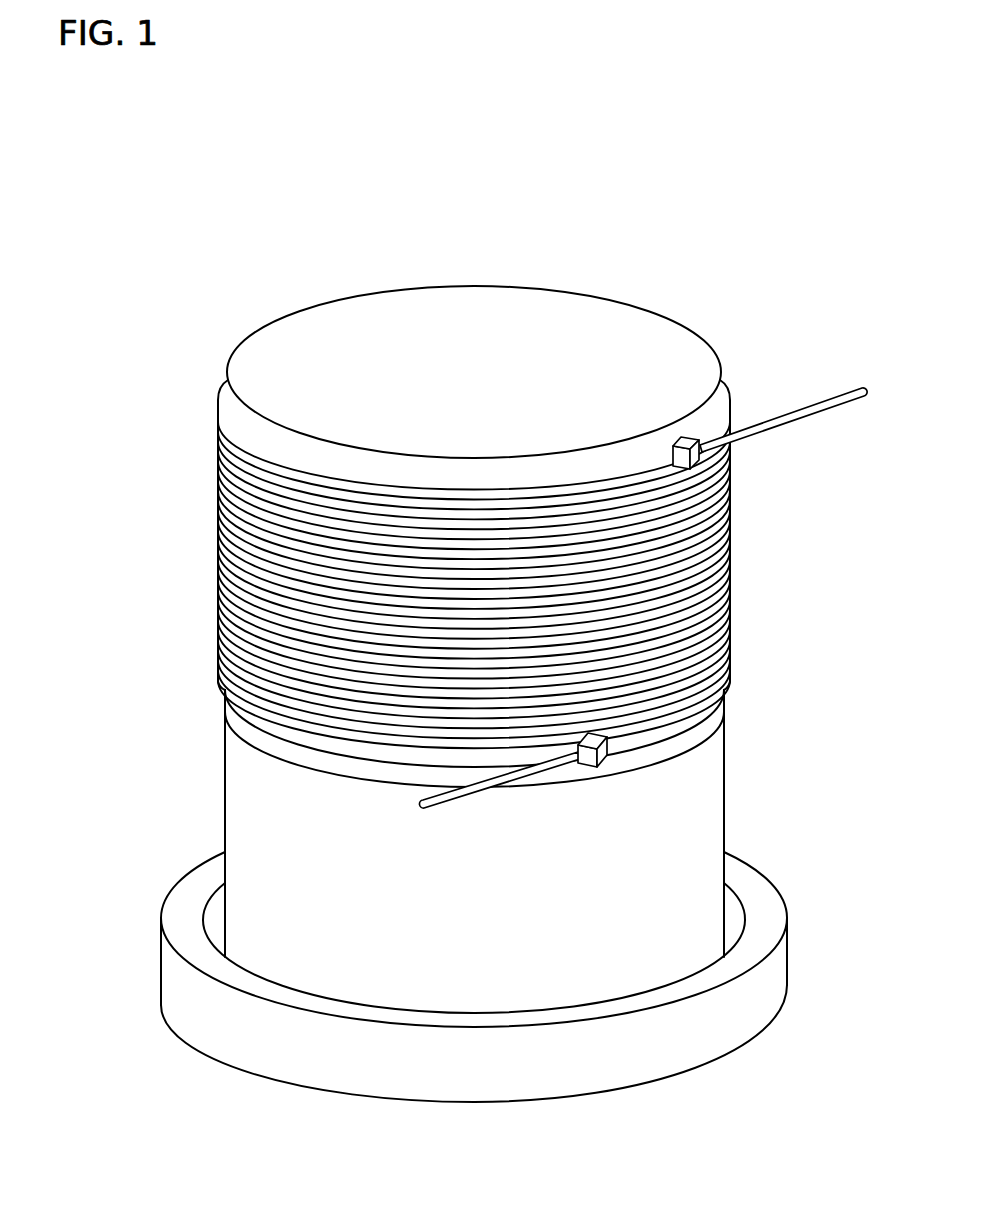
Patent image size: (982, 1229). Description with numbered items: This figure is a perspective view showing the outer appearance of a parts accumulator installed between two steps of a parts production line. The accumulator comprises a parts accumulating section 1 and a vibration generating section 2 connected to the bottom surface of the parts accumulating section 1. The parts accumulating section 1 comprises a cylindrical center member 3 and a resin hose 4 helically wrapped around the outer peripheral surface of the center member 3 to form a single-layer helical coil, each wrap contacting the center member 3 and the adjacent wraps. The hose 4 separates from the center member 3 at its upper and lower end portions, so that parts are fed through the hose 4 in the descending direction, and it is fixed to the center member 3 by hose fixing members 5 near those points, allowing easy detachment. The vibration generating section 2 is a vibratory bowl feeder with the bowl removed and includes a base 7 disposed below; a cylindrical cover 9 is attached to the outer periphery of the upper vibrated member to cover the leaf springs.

The parts accumulating section 1 is at (242, 340).
The vibration generating section 2 is at (727, 730).
The center member 3 is at (483, 320).
The hose 4 is at (822, 404).
The hose fixing member 5 is at (688, 438).
The base 7 is at (738, 1006).
The cover 9 is at (670, 795).